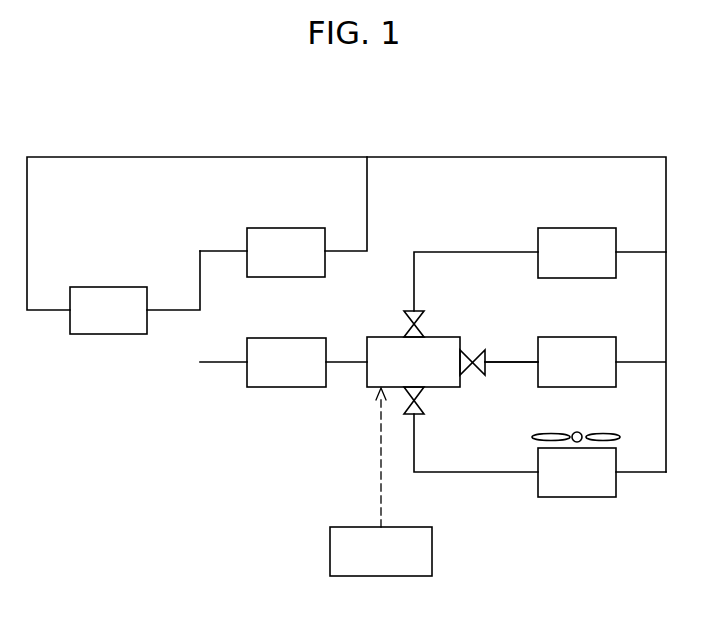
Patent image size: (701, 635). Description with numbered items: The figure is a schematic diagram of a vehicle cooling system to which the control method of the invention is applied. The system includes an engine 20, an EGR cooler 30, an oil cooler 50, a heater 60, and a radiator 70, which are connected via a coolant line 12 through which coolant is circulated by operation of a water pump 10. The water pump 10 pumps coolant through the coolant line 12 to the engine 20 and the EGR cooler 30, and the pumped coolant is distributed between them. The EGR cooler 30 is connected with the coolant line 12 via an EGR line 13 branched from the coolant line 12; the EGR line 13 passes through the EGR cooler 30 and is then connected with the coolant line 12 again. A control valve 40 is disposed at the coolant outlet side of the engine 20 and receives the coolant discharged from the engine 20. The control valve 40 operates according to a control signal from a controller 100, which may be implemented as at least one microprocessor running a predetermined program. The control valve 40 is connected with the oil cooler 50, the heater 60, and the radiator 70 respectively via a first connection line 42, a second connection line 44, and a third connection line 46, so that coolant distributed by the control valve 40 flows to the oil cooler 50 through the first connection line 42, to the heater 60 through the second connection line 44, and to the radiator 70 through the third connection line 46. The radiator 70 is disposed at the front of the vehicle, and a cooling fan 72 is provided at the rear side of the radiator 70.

The water pump 10 is at (86, 334).
The coolant line 12 is at (205, 157).
The EGR line 13 is at (200, 266).
The engine 20 is at (287, 387).
The EGR cooler 30 is at (275, 228).
The control valve 40 is at (373, 337).
The first connection line 42 is at (504, 252).
The second connection line 44 is at (504, 362).
The third connection line 46 is at (506, 472).
The oil cooler 50 is at (576, 228).
The heater 60 is at (576, 337).
The radiator 70 is at (576, 497).
The cooling fan 72 is at (532, 437).
The controller 100 is at (330, 553).